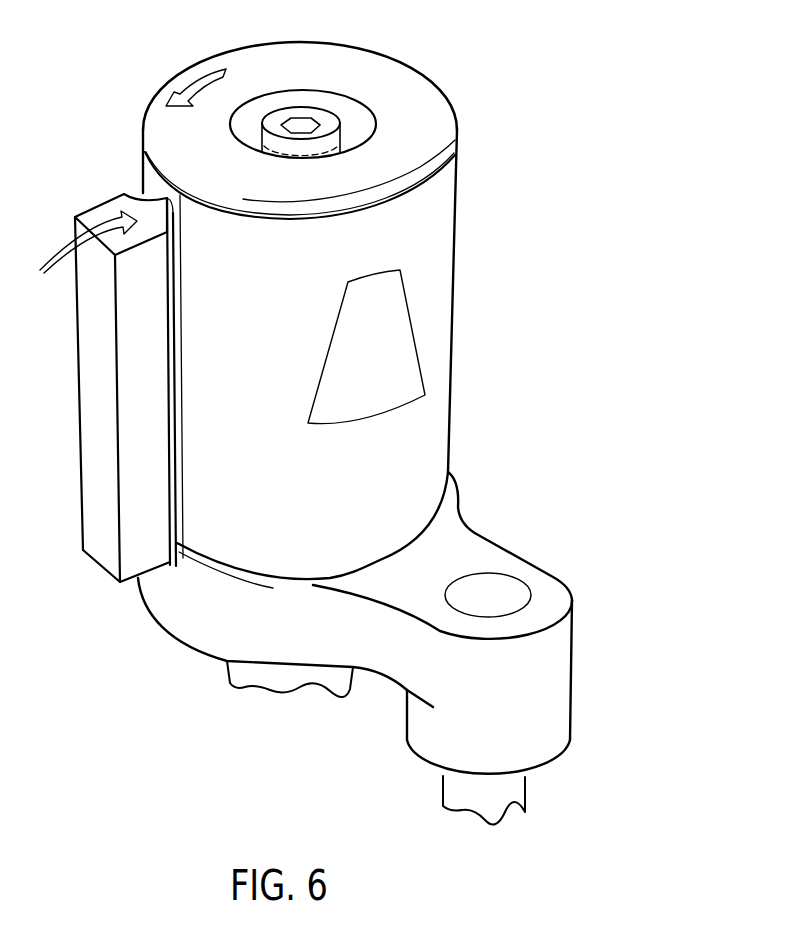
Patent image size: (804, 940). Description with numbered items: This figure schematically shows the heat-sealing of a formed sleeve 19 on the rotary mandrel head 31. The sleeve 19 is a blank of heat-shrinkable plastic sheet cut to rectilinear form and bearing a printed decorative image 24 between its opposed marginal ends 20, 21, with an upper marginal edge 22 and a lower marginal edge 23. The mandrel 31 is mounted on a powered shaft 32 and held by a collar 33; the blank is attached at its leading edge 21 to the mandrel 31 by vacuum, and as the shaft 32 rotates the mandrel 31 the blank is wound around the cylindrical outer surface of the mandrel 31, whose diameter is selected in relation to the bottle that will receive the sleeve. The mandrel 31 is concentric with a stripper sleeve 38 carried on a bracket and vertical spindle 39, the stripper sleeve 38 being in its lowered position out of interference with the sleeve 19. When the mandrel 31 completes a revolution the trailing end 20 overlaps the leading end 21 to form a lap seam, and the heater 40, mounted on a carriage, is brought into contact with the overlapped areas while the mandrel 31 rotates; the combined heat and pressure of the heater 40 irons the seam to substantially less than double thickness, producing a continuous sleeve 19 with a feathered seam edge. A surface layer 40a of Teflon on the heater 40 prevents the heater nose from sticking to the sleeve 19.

The sleeve 19 is at (256, 467).
The marginal end 20 is at (170, 185).
The marginal end (leading edge) 21 is at (203, 192).
The upper marginal edge 22 is at (427, 79).
The lower marginal edge 23 is at (287, 574).
The decorative image 24 is at (407, 397).
The rotary mandrel head 31 is at (321, 193).
The shaft 32 is at (277, 686).
The collar 33 is at (323, 123).
The stripper sleeve 38 is at (457, 543).
The vertical spindle 39 is at (512, 804).
The heater 40 is at (158, 398).
The surface layer 40a is at (140, 192).